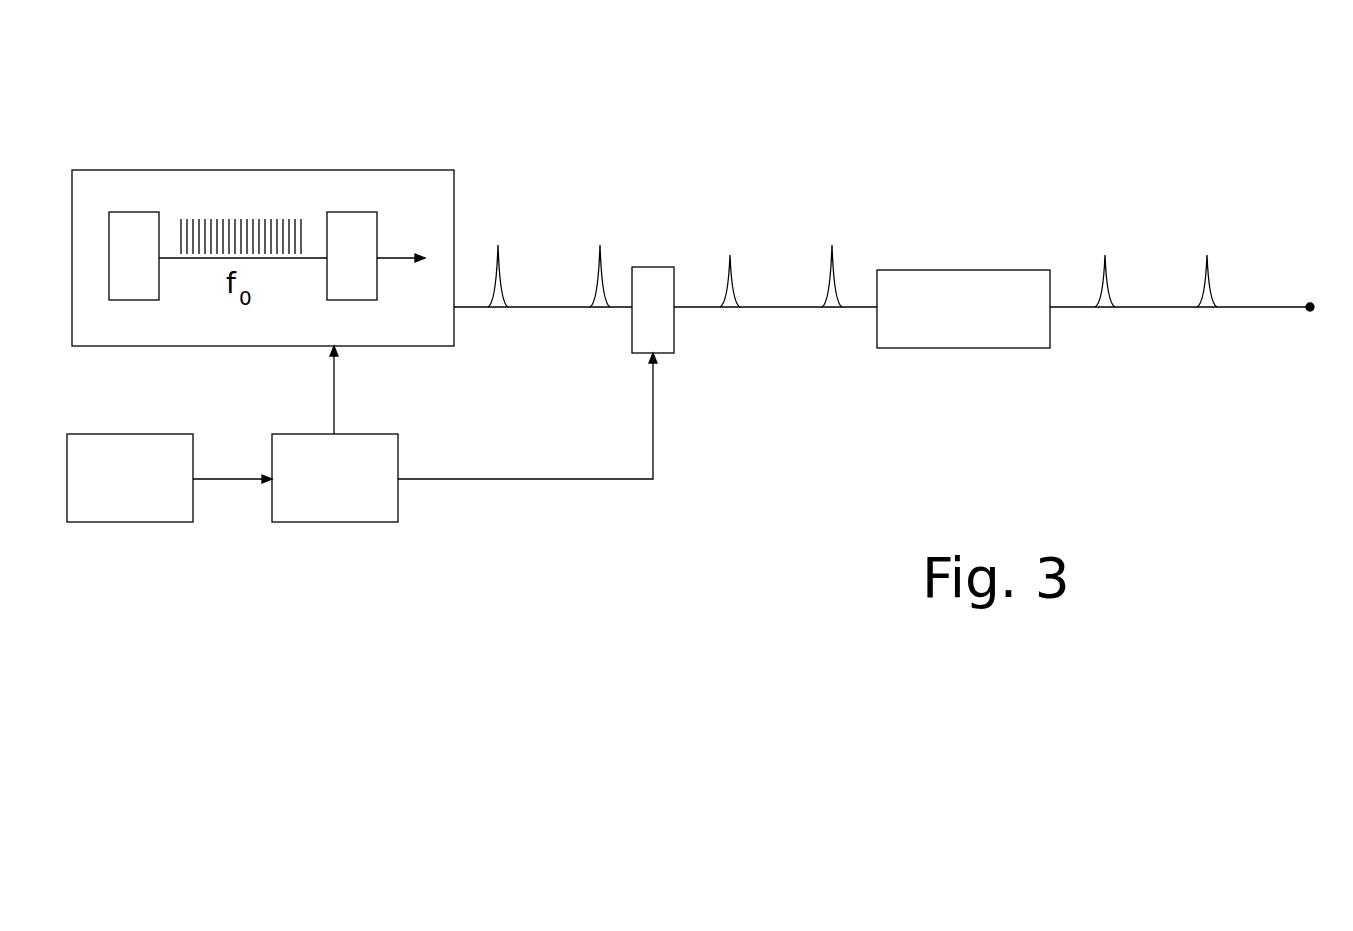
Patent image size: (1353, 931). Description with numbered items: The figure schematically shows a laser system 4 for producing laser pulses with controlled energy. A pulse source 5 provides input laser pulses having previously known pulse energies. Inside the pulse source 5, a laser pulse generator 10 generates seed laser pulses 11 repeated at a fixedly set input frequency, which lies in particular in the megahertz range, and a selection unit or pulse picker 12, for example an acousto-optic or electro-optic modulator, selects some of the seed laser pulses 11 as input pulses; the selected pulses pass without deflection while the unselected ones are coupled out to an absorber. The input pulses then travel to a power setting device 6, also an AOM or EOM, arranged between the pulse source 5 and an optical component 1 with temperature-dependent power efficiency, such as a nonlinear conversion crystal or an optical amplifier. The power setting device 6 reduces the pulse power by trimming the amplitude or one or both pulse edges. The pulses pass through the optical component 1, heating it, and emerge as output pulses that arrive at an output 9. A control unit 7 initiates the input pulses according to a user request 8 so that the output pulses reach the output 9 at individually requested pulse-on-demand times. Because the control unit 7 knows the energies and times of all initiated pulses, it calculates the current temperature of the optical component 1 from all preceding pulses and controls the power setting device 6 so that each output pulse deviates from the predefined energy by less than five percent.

The optical component 1 is at (938, 318).
The laser system 4 is at (785, 203).
The pulse source 5 is at (422, 333).
The power setting device 6 is at (643, 325).
The control unit 7 is at (325, 493).
The user request 8 is at (120, 493).
The output 9 is at (1310, 303).
The laser pulse generator 10 is at (116, 271).
The seed laser pulses 11 is at (243, 219).
The selection unit (pulse picker) 12 is at (334, 271).